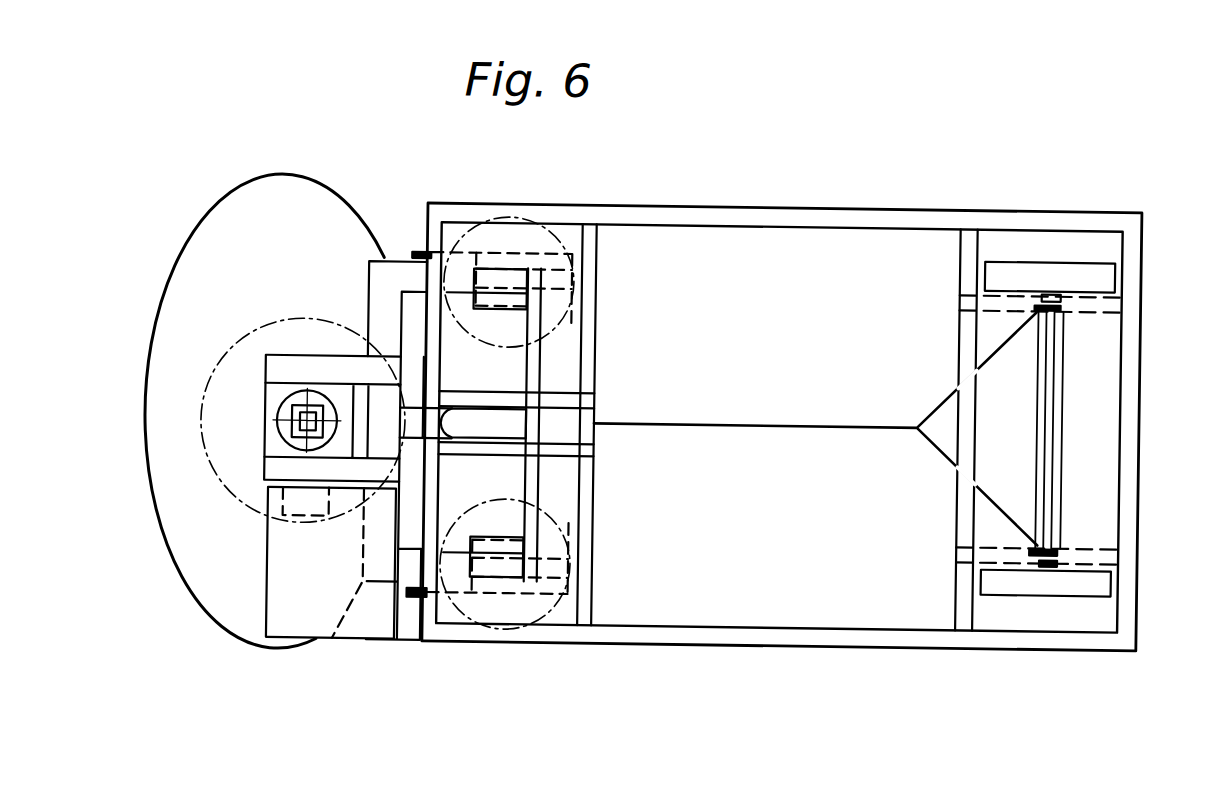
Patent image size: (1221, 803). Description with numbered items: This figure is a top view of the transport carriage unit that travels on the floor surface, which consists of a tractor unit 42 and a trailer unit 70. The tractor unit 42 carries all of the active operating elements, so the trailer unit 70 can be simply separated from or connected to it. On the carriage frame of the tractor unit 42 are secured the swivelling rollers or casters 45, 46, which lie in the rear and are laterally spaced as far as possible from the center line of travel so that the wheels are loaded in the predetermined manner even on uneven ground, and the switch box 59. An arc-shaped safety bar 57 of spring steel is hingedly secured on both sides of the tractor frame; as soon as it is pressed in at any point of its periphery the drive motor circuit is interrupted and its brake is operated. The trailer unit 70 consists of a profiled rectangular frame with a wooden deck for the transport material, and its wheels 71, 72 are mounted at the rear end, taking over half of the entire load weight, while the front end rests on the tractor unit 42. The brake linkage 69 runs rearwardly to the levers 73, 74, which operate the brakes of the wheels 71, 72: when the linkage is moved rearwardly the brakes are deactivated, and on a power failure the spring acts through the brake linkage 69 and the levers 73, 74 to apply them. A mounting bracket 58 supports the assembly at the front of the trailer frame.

The tractor unit 42 is at (297, 370).
The swivelling roller 45 is at (498, 572).
The swivelling roller 46 is at (496, 272).
The safety bar 57 is at (216, 635).
The mounting bracket 58 is at (384, 258).
The switch box 59 is at (333, 606).
The brake linkage 69 is at (754, 423).
The trailer unit 70 is at (669, 210).
The trailer wheel 71 is at (1082, 573).
The trailer wheel 72 is at (1038, 266).
The lever 73 is at (1065, 547).
The lever 74 is at (1069, 289).